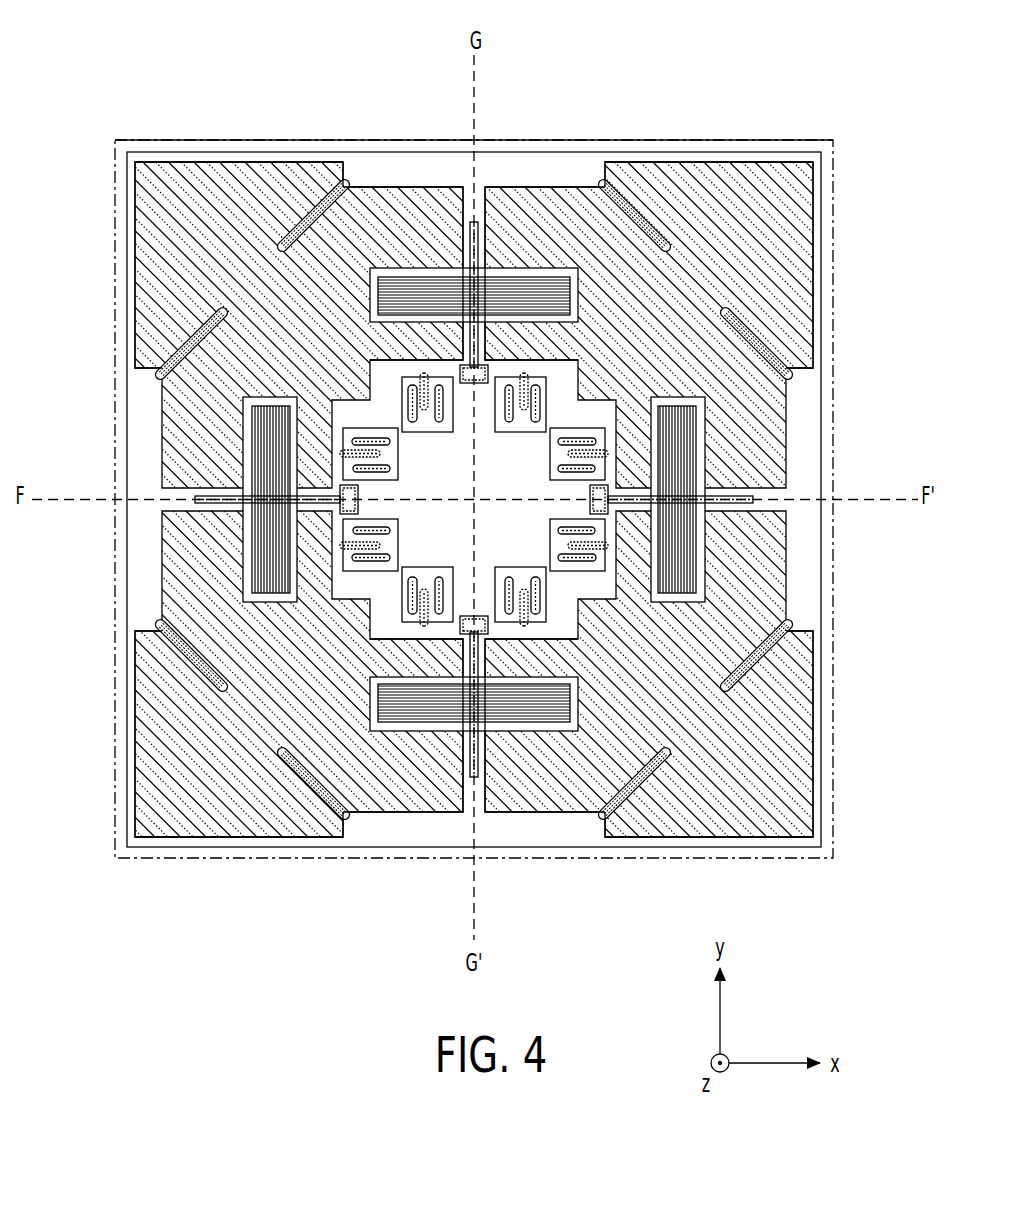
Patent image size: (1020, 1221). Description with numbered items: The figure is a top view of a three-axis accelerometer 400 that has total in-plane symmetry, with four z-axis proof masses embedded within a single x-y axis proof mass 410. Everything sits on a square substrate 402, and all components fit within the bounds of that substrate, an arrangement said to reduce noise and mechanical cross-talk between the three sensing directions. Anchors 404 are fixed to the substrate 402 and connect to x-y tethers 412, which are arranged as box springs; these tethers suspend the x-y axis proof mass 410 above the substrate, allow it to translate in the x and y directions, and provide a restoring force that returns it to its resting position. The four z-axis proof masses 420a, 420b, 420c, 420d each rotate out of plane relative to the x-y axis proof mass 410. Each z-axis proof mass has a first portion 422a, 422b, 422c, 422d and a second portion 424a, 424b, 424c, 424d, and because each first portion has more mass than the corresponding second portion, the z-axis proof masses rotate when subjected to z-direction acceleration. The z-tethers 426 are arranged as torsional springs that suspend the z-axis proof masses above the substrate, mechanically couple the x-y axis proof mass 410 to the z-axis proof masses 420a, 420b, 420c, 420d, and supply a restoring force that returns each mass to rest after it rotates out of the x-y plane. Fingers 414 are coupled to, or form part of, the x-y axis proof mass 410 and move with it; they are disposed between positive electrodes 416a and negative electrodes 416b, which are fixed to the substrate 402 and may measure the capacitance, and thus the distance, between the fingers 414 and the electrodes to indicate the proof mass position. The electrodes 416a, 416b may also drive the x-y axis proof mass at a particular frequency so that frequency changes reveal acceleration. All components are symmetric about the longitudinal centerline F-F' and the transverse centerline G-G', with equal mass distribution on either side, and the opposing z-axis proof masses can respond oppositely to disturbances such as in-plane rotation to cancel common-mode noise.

The three-axis accelerometer 400 is at (150, 88).
The substrate 402 is at (790, 140).
The anchors 404 is at (467, 366).
The x-y axis proof mass 410 is at (518, 175).
The x-y tethers 412 is at (483, 276).
The fingers 414 is at (410, 388).
The positive electrodes 416a is at (345, 561).
The negative electrodes 416b is at (345, 533).
The z-axis proof mass 420a is at (685, 190).
The z-axis proof mass 420b is at (690, 770).
The z-axis proof mass 420c is at (225, 770).
The z-axis proof mass 420d is at (261, 203).
The first portion 422a is at (620, 360).
The first portion 422b is at (590, 738).
The first portion 422c is at (325, 740).
The first portion 422d is at (338, 250).
The second portion 424a is at (760, 238).
The second portion 424b is at (760, 727).
The second portion 424c is at (190, 738).
The second portion 424d is at (190, 238).
The z-tethers 426 is at (176, 328).